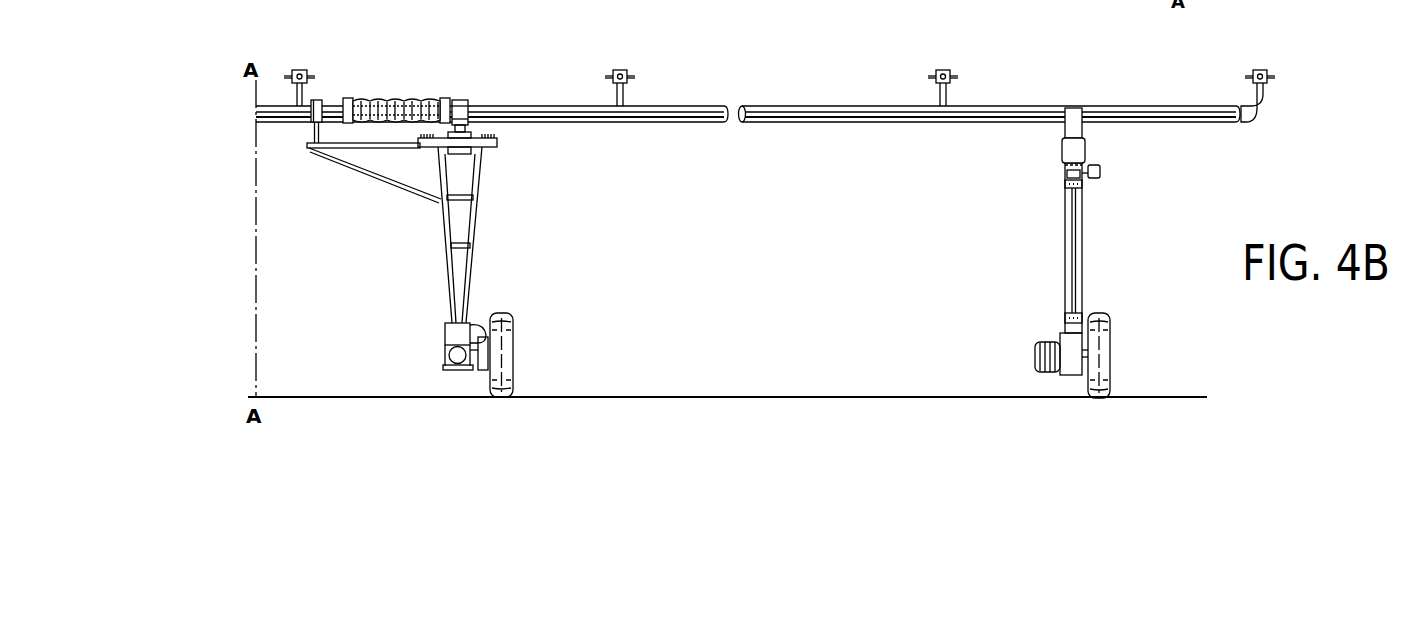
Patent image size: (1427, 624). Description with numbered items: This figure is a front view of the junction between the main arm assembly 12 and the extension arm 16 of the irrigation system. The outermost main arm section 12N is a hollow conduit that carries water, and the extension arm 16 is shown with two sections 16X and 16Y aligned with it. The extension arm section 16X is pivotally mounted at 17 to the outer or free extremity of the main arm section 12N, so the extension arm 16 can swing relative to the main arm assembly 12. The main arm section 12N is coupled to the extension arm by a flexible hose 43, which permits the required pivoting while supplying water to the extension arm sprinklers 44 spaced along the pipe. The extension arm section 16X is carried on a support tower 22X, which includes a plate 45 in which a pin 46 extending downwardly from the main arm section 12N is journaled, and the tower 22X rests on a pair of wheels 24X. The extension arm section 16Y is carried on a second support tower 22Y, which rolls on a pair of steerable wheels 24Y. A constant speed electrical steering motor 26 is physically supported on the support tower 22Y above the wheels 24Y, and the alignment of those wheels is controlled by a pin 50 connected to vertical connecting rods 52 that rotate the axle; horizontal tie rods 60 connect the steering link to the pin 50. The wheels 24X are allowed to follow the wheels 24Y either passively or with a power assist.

The main arm assembly 12 is at (318, 43).
The main arm section 12N is at (325, 100).
The extension arm 16 is at (785, 67).
The extension arm section 16X is at (557, 108).
The extension arm section 16Y is at (1188, 112).
The pivot mounting 17 is at (372, 121).
The support tower 22X is at (467, 257).
The support tower 22Y is at (1082, 253).
The wheels 24X is at (505, 350).
The wheels 24Y is at (1098, 353).
The steering motor 26 is at (1060, 153).
The flexible hose 43 is at (405, 102).
The extension arm sprinklers 44 is at (621, 70).
The plate 45 is at (400, 149).
The pin 46 is at (314, 133).
The pin 50 is at (1082, 177).
The vertical connecting rods 52 is at (1072, 220).
The horizontal tie rods 60 is at (1100, 168).